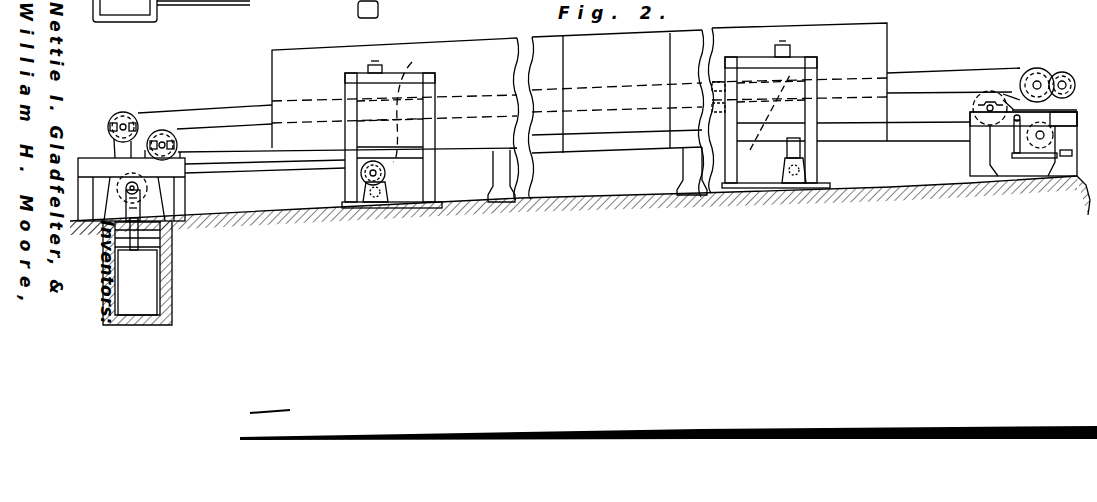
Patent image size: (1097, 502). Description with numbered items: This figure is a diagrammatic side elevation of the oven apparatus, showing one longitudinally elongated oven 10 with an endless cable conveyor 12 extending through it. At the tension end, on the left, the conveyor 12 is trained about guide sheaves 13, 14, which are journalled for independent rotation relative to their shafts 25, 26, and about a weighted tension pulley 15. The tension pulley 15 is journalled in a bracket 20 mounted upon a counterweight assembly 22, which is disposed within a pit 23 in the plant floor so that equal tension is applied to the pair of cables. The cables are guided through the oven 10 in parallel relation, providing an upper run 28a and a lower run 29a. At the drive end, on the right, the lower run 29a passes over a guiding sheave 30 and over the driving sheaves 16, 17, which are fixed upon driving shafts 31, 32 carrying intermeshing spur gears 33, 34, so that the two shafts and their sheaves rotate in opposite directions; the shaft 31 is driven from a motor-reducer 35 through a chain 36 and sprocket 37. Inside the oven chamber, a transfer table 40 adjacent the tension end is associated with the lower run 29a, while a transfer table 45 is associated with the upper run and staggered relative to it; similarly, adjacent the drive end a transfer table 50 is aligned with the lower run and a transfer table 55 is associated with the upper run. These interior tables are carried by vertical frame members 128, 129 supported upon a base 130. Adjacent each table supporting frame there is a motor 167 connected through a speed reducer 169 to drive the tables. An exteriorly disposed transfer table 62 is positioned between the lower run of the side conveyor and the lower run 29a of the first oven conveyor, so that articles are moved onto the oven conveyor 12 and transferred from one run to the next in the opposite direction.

The oven 10 is at (515, 29).
The conveyor 12 is at (197, 105).
The guide sheave 13 is at (110, 116).
The guide sheave 14 is at (182, 138).
The weighted tension pulley 15 is at (146, 188).
The driving sheave 16 is at (1034, 76).
The driving sheave 17 is at (1066, 72).
The bracket 20 is at (140, 202).
The counterweight assembly 22 is at (160, 236).
The pit 23 is at (158, 297).
The shaft 25 is at (126, 120).
The shaft 26 is at (162, 130).
The upper run 28a is at (228, 94).
The lower run 29a is at (226, 131).
The guiding sheave 30 is at (980, 107).
The driving shaft 31 is at (1038, 83).
The driving shaft 32 is at (1062, 76).
The spur gear 33 is at (1023, 75).
The spur gear 34 is at (1077, 73).
The motor-reducer 35 is at (1036, 122).
The chain 36 is at (1024, 128).
The sprocket 37 is at (1028, 75).
The transfer table 40 is at (385, 165).
The transfer table 45 is at (414, 106).
The transfer table 50 is at (776, 131).
The transfer table 55 is at (762, 58).
The transfer table 62 is at (208, 0).
The vertical frame member 128 is at (352, 173).
The vertical frame member 129 is at (437, 168).
The base 130 is at (446, 201).
The motor 167 is at (385, 189).
The speed reducer 169 is at (380, 178).